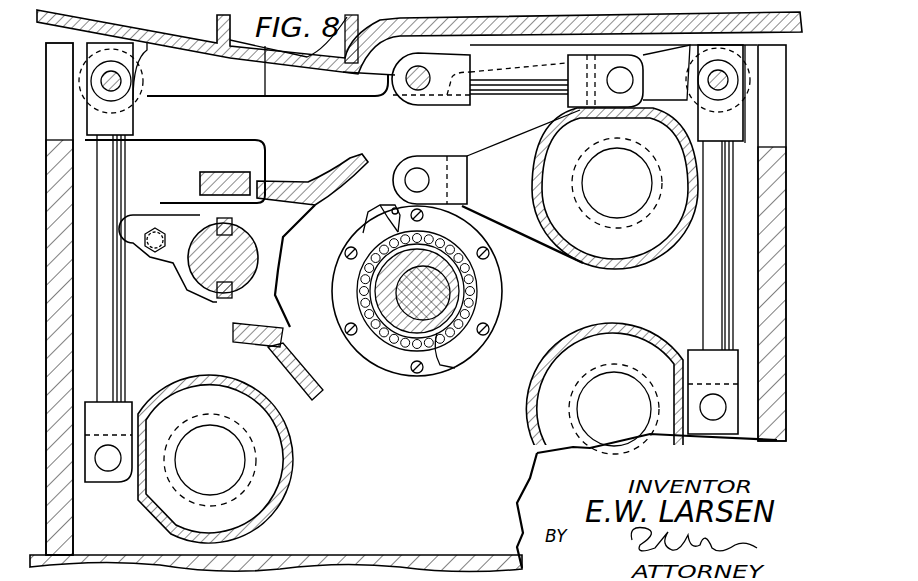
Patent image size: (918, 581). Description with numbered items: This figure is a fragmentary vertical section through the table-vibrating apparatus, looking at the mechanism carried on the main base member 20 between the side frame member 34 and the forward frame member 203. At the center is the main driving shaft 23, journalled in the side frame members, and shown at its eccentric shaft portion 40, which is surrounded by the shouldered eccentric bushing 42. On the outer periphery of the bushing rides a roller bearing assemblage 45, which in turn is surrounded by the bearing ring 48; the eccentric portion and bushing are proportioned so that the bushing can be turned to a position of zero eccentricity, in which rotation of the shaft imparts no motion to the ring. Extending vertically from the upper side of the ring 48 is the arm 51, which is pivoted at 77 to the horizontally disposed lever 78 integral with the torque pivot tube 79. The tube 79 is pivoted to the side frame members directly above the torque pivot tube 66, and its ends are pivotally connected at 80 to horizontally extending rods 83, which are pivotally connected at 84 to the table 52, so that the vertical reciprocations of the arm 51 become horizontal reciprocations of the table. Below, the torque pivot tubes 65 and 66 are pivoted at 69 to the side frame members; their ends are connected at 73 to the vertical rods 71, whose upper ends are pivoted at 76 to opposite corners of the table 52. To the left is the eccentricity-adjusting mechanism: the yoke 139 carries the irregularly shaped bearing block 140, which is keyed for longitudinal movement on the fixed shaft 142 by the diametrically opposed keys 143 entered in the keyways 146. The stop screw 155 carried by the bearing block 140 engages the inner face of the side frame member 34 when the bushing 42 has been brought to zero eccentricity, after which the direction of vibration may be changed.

The main base member 20 is at (380, 555).
The main driving shaft 23 is at (395, 345).
The side frame member 34 is at (530, 476).
The eccentric shaft portion 40 is at (440, 300).
The eccentric bushing 42 is at (440, 330).
The roller bearing assemblage 45 is at (387, 215).
The bearing ring 48 is at (370, 230).
The arm 51 is at (387, 202).
The table 52 is at (197, 36).
The torque pivot tube 65 is at (292, 442).
The torque pivot tube 66 is at (612, 325).
The pivot 69 is at (595, 190).
The rod 71 is at (115, 377).
The pivotal connection 73 is at (108, 465).
The pivotal connection 76 is at (116, 82).
The pivot 77 is at (417, 178).
The lever 78 is at (508, 150).
The torque pivot tube 79 is at (592, 267).
The pivotal connection 80 is at (619, 75).
The rod 83 is at (498, 67).
The pivotal connection 84 is at (424, 72).
The yoke 139 is at (342, 165).
The bearing block 140 is at (283, 312).
The fixed shaft 142 is at (258, 262).
The key 143 is at (190, 208).
The keyway 146 is at (233, 224).
The stop screw 155 is at (156, 253).
The forward frame member 203 is at (67, 358).